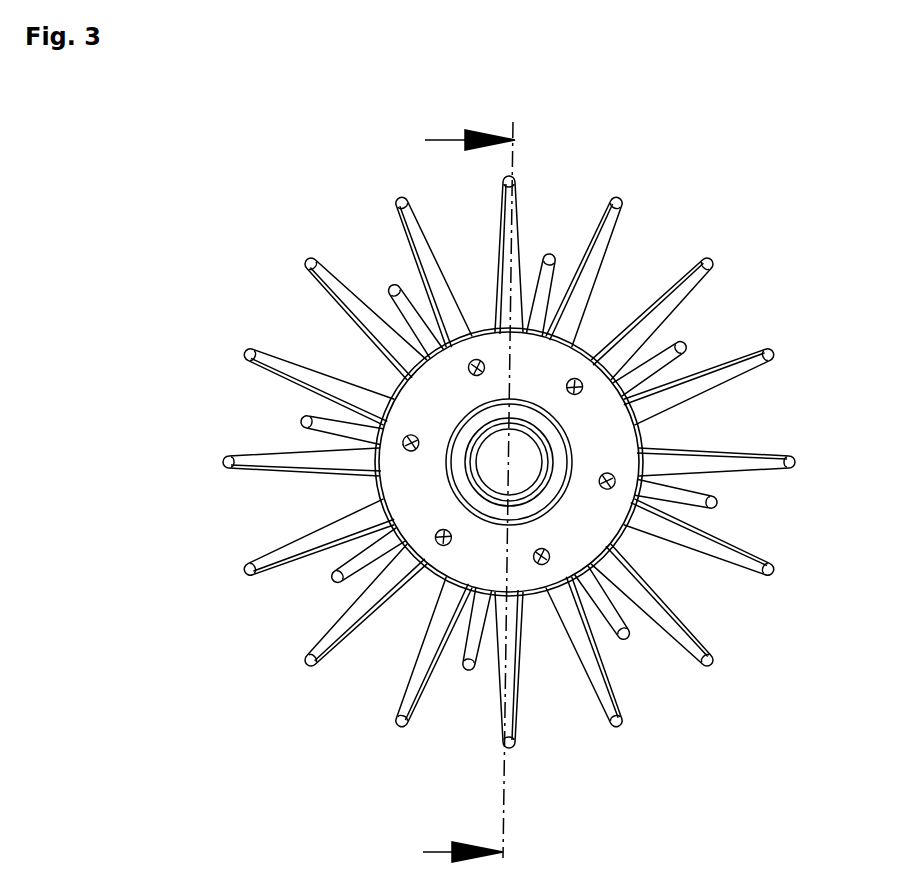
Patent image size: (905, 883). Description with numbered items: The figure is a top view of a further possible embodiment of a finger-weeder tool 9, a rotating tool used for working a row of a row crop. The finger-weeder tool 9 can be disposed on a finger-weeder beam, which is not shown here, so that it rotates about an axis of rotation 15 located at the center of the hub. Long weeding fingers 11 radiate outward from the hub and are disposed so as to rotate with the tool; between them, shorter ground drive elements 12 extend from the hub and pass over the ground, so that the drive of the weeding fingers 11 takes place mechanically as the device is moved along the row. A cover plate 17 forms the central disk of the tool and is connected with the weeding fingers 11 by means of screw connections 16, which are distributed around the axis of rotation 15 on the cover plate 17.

The finger-weeder tool 9 is at (472, 474).
The weeding fingers 11 is at (267, 365).
The ground drive elements 12 is at (727, 497).
The axis of rotation 15 is at (513, 470).
The screw connections 16 is at (541, 565).
The cover plate 17 is at (603, 435).